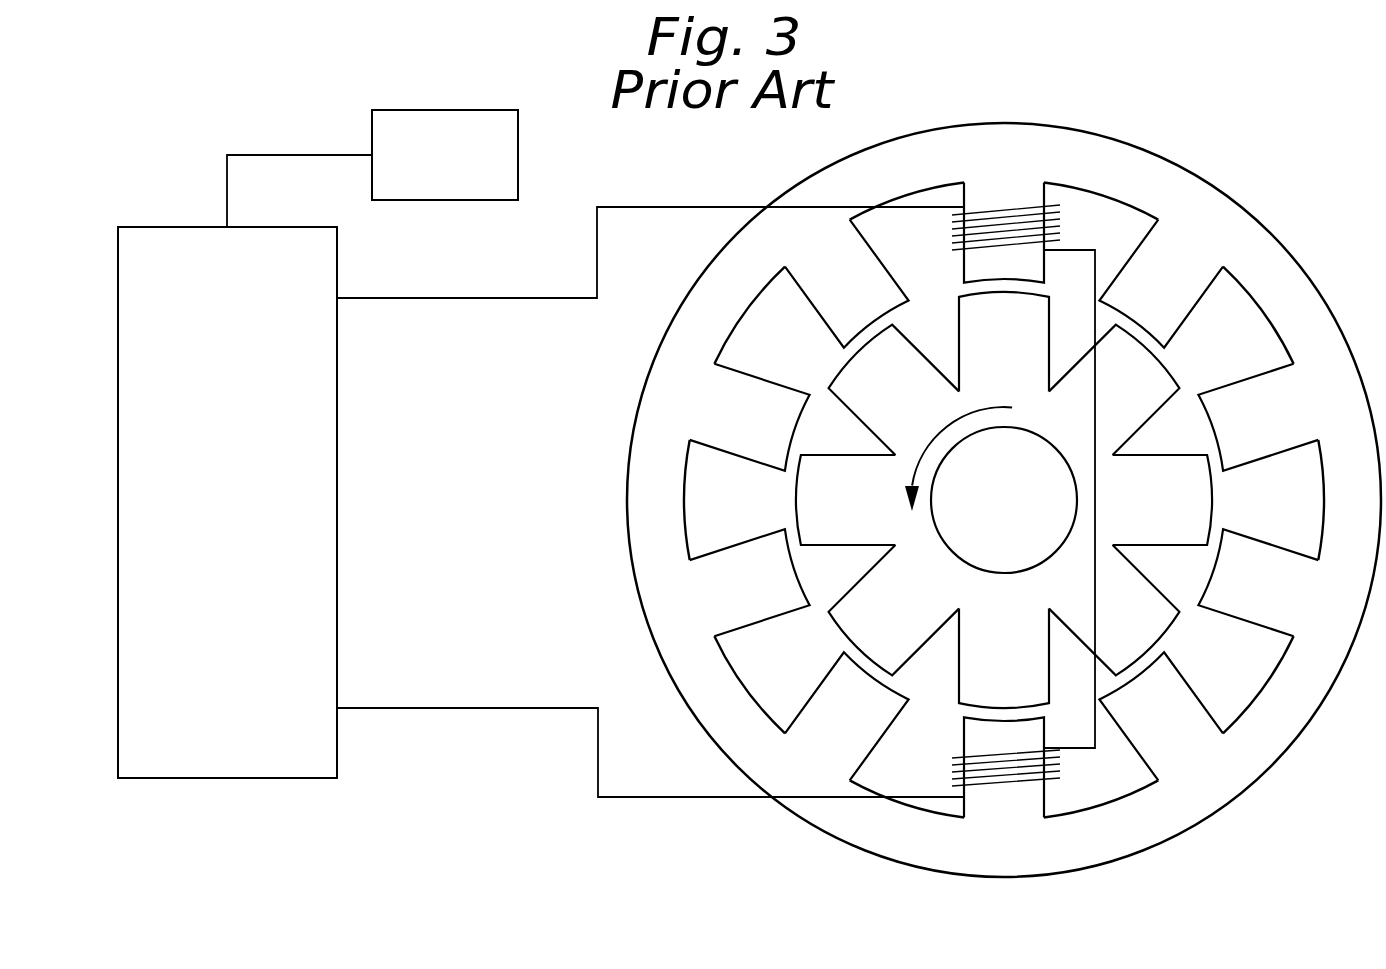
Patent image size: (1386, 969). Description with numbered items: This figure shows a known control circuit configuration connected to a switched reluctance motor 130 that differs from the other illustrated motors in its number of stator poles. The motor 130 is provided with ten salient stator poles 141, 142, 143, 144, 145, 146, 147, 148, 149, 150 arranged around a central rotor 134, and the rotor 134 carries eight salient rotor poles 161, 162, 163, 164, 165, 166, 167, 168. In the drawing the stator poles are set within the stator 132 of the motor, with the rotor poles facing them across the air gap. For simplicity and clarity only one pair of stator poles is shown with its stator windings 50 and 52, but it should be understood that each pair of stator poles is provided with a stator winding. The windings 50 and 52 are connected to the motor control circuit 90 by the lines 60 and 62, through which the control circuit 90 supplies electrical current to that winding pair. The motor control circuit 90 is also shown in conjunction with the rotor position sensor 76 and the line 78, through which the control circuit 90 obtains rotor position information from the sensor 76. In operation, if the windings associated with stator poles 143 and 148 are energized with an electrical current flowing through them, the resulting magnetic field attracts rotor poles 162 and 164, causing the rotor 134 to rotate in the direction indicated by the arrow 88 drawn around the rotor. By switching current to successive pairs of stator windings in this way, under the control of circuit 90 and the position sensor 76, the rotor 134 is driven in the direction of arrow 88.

The switched reluctance motor 130 is at (1258, 118).
The stator 132 is at (658, 597).
The rotor 134 is at (982, 510).
The salient stator pole 141 is at (990, 272).
The salient stator pole 142 is at (1142, 290).
The salient stator pole 143 is at (1234, 430).
The salient stator pole 144 is at (1235, 595).
The salient stator pole 145 is at (1140, 729).
The salient stator pole 146 is at (982, 743).
The salient stator pole 147 is at (826, 729).
The salient stator pole 148 is at (727, 593).
The salient stator pole 149 is at (722, 428).
The salient stator pole 150 is at (821, 297).
The salient rotor pole 161 is at (983, 337).
The salient rotor pole 162 is at (1108, 391).
The salient rotor pole 163 is at (1144, 510).
The salient rotor pole 164 is at (1104, 625).
The salient rotor pole 165 is at (983, 673).
The salient rotor pole 166 is at (867, 626).
The salient rotor pole 167 is at (821, 511).
The salient rotor pole 168 is at (866, 392).
The stator winding 50 is at (1058, 206).
The stator winding 52 is at (1058, 784).
The line 60 is at (470, 298).
The line 62 is at (485, 708).
The rotor position sensor 76 is at (455, 110).
The line 78 is at (308, 155).
The arrow 88 is at (978, 408).
The motor control circuit 90 is at (165, 228).